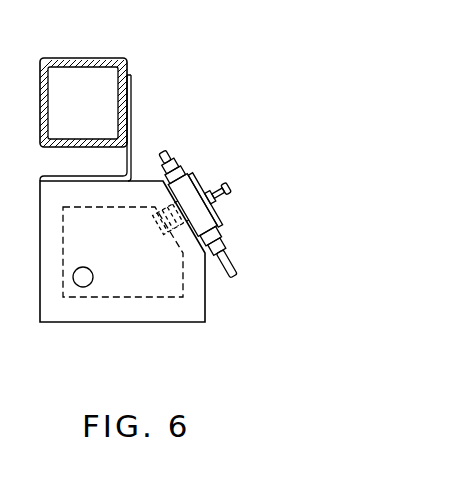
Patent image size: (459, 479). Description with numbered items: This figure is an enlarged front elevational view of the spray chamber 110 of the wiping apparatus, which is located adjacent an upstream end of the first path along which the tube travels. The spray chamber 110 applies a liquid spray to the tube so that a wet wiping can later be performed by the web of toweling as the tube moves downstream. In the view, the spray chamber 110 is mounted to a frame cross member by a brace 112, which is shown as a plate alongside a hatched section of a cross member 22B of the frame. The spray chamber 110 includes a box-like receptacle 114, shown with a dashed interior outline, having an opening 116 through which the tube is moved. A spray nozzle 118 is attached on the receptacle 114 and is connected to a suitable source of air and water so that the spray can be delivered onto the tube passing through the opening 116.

The intermediate cross member 22B is at (101, 57).
The brace 112 is at (132, 105).
The spray chamber 110 is at (230, 211).
The spray nozzle 118 is at (217, 222).
The box-like receptacle 114 is at (68, 322).
The opening 116 is at (91, 281).